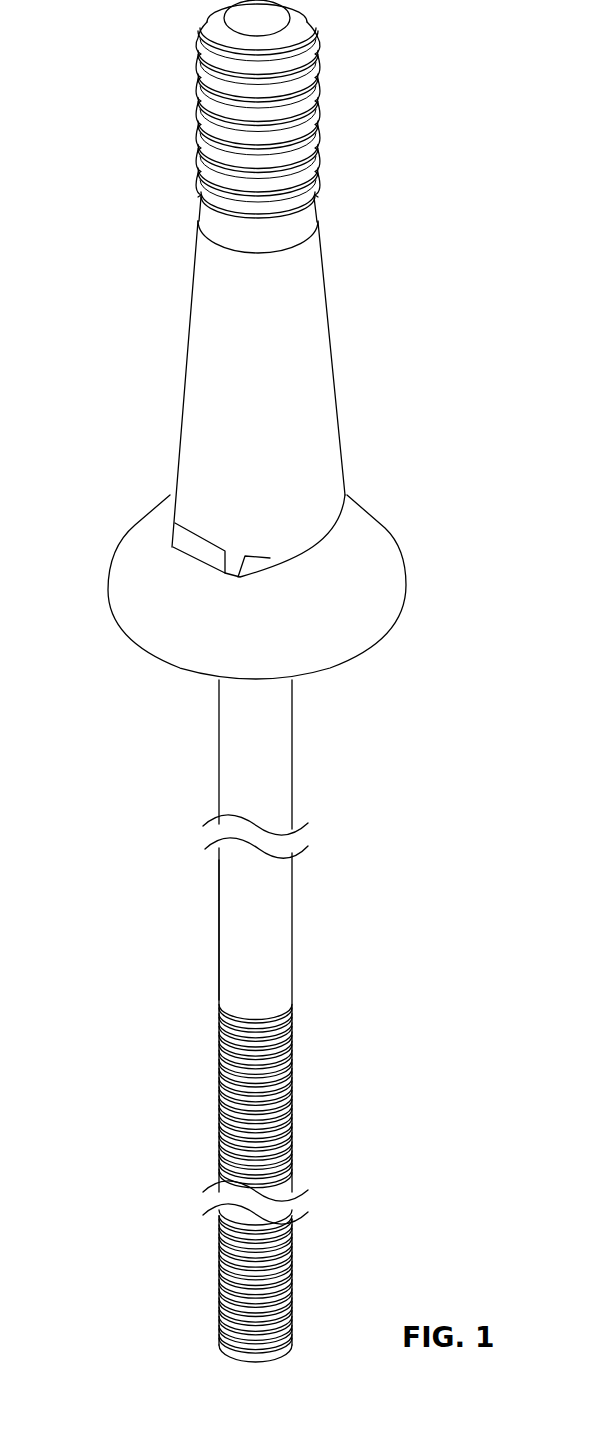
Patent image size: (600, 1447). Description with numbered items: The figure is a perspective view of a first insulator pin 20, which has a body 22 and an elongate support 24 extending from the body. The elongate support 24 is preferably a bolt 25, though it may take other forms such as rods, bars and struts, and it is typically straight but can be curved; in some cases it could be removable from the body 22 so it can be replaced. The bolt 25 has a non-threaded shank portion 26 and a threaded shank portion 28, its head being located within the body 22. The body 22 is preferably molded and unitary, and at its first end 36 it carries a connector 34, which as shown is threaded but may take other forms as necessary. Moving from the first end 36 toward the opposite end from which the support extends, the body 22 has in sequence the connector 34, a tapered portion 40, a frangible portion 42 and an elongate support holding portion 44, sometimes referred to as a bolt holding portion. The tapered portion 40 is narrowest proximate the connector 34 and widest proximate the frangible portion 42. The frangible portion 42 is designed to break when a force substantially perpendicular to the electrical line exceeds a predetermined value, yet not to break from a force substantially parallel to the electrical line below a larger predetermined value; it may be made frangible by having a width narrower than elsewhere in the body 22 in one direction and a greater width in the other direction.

The insulator pin 20 is at (470, 157).
The body 22 is at (403, 377).
The elongate support 24 is at (347, 897).
The bolt 25 is at (287, 768).
The non-threaded shank portion 26 is at (218, 795).
The threaded shank portion 28 is at (290, 1127).
The connector 34 is at (313, 103).
The first end 36 is at (222, 4).
The tapered portion 40 is at (320, 302).
The frangible portion 42 is at (167, 530).
The elongate support holding portion 44 is at (388, 602).